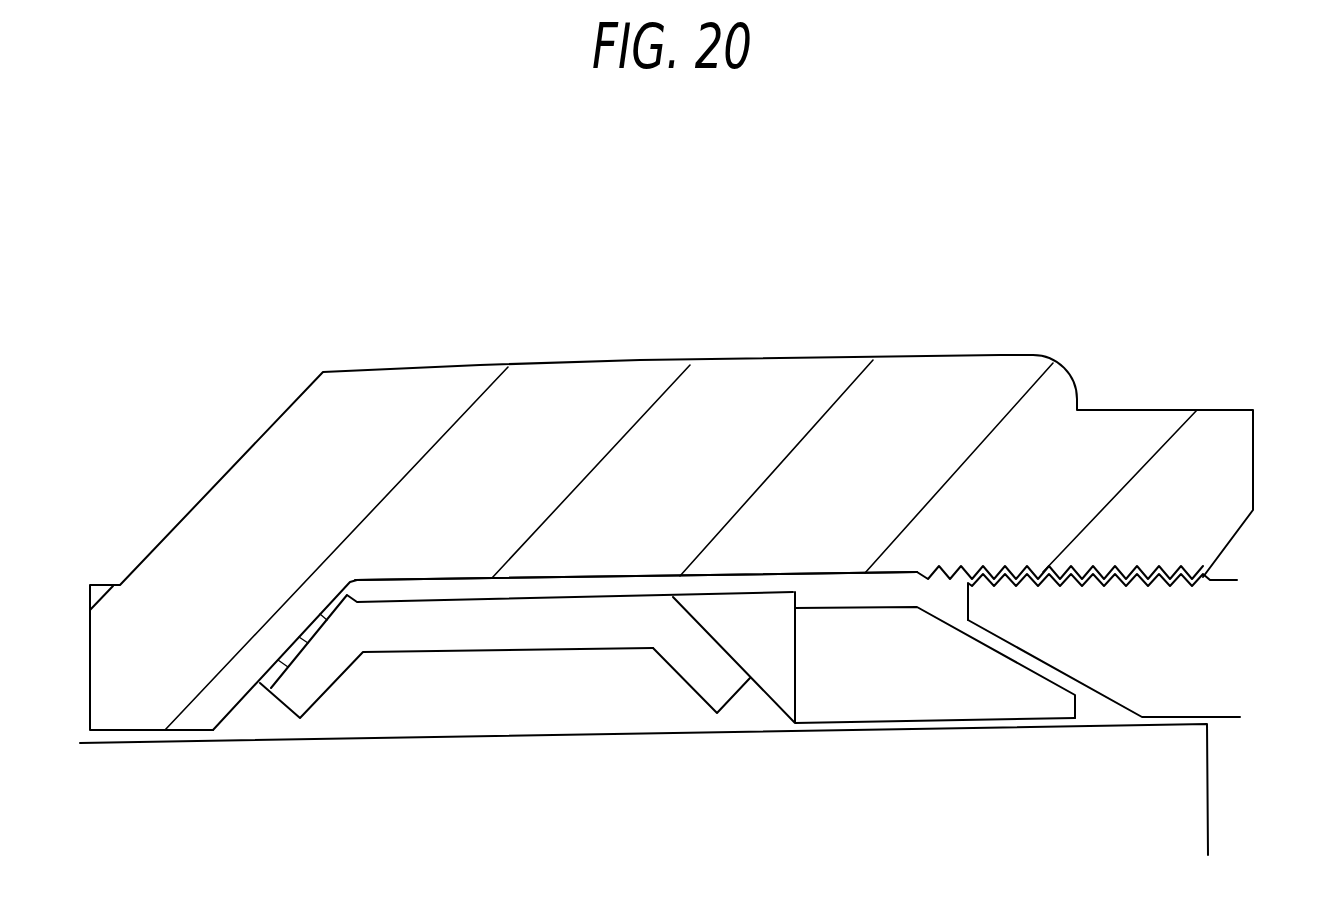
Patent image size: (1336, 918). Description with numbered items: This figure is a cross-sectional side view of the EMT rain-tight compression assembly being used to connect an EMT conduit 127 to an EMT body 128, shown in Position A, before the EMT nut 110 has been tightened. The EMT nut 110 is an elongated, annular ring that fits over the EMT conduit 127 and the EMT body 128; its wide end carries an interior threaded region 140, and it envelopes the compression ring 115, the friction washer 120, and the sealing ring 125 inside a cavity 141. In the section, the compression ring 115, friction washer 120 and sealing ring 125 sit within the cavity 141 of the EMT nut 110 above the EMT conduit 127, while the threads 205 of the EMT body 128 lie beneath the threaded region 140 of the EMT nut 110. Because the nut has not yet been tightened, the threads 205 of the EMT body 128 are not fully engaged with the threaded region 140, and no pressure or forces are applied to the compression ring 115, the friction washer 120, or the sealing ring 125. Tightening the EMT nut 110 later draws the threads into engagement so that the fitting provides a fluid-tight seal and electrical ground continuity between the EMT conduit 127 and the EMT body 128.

The EMT nut 110 is at (873, 360).
The compression ring 115 is at (473, 623).
The friction washer 120 is at (773, 653).
The sealing ring 125 is at (1002, 695).
The EMT conduit 127 is at (1185, 758).
The EMT body 128 is at (1130, 677).
The threaded region 140 is at (1087, 565).
The cavity 141 is at (630, 703).
The threads 205 is at (1065, 580).